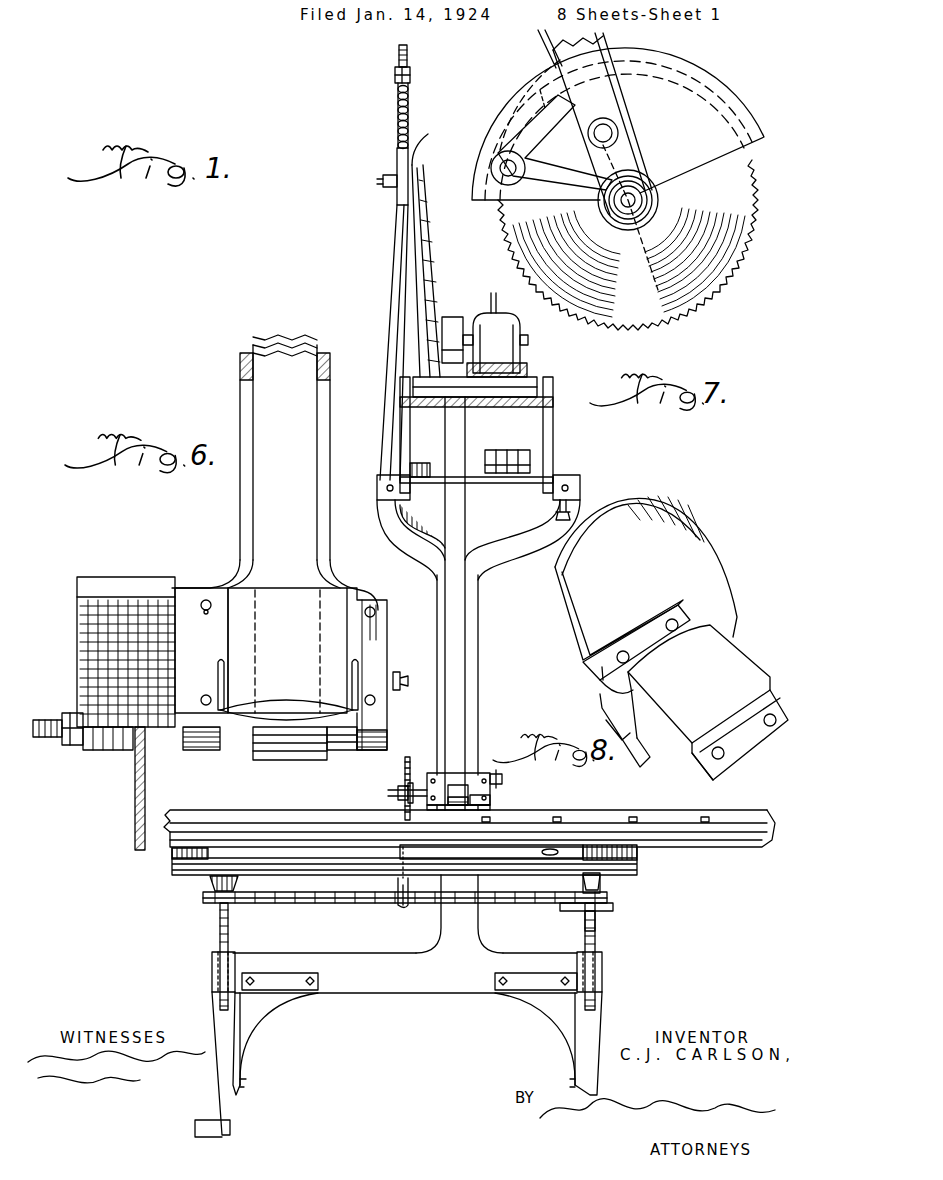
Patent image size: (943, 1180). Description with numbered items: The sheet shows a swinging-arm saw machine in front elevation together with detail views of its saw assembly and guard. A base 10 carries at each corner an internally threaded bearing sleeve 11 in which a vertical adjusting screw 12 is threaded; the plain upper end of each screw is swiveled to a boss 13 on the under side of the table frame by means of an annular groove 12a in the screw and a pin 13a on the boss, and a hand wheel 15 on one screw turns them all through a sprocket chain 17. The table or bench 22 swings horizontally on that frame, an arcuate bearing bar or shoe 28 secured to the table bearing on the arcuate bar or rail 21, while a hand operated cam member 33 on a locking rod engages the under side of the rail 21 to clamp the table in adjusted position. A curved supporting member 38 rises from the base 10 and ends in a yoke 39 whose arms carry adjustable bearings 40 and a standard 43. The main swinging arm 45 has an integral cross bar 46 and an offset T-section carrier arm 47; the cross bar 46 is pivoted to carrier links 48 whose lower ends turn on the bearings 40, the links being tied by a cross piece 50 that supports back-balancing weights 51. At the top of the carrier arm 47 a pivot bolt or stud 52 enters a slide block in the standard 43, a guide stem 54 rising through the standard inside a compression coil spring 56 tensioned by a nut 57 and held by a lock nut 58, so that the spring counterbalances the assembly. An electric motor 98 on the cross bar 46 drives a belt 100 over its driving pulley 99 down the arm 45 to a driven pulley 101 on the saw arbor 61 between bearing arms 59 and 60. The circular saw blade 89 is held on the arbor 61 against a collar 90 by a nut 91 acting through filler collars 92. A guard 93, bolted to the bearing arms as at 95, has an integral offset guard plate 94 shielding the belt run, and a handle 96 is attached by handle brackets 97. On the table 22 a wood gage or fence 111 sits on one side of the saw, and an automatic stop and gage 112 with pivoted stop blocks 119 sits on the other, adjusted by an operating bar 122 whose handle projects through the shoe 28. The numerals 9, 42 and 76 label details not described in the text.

In FIG. 7, the swinging arm 9 is at (596, 118).
In FIG. 1, the base 10 is at (365, 960).
In FIG. 1, the bearing sleeve 11 is at (240, 960).
In FIG. 1, the adjusting screw 12 is at (219, 922).
In FIG. 1, the annular groove 12a is at (560, 903).
In FIG. 1, the boss 13 is at (210, 882).
In FIG. 1, the pin 13a is at (601, 880).
In FIG. 1, the hand wheel 15 is at (614, 906).
In FIG. 1, the sprocket chain 17 is at (305, 903).
In FIG. 1, the arcuate bar or rail 21 is at (640, 870).
In FIG. 1, the table or bench 22 is at (722, 840).
In FIG. 1, the arcuate bearing bar or shoe 28 is at (640, 852).
In FIG. 1, the hand operated cam member 33 is at (403, 906).
In FIG. 1, the curved supporting member 38 is at (480, 697).
In FIG. 1, the yoke 39 is at (487, 535).
In FIG. 1, the bearings 40 is at (380, 478).
In FIG. 1, the clamp screw 42 is at (572, 512).
In FIG. 1, the standard 43 is at (392, 283).
In FIG. 1, the main swinging arm 45 is at (467, 640).
In FIG. 6, the main swinging arm 45 is at (240, 500).
In FIG. 1, the cross bar 46 is at (500, 393).
In FIG. 1, the carrier arm 47 is at (432, 290).
In FIG. 1, the carrier links 48 is at (411, 430).
In FIG. 1, the cross piece 50 is at (425, 468).
In FIG. 1, the weights 51 is at (492, 455).
In FIG. 1, the pivot bolt or stud 52 is at (416, 158).
In FIG. 1, the guide stem 54 is at (409, 50).
In FIG. 1, the compression coil spring 56 is at (409, 110).
In FIG. 1, the nut 57 is at (413, 78).
In FIG. 1, the lock nut 58 is at (394, 74).
In FIG. 1, the bearing arm 59 is at (492, 798).
In FIG. 6, the bearing arm 59 is at (382, 730).
In FIG. 1, the bearing arm 60 is at (430, 773).
In FIG. 6, the bearing arm 60 is at (202, 750).
In FIG. 1, the saw arbor 61 is at (478, 810).
In FIG. 6, the saw arbor 61 is at (343, 741).
In FIG. 7, the saw arbor 61 is at (643, 185).
In FIG. 1, the pin 76 is at (503, 778).
In FIG. 6, the pin 76 is at (405, 675).
In FIG. 7, the pin 76 is at (615, 128).
In FIG. 1, the circular saw blade 89 is at (404, 771).
In FIG. 6, the circular saw blade 89 is at (135, 795).
In FIG. 7, the circular saw blade 89 is at (722, 278).
In FIG. 6, the collar 90 is at (145, 750).
In FIG. 1, the nut 91 is at (388, 792).
In FIG. 6, the nut 91 is at (60, 740).
In FIG. 6, the filler collars 92 is at (78, 748).
In FIG. 6, the guard 93 is at (120, 583).
In FIG. 7, the guard 93 is at (735, 96).
In FIG. 8, the guard 93 is at (700, 550).
In FIG. 6, the offset guard plate 94 is at (287, 650).
In FIG. 8, the offset guard plate 94 is at (738, 665).
In FIG. 6, the bolts 95 is at (206, 612).
In FIG. 6, the handle 96 is at (272, 707).
In FIG. 7, the handle 96 is at (512, 180).
In FIG. 6, the handle brackets 97 is at (358, 670).
In FIG. 7, the handle brackets 97 is at (533, 150).
In FIG. 1, the electric motor 98 is at (522, 353).
In FIG. 1, the driving pulley 99 is at (474, 340).
In FIG. 1, the belt 100 is at (452, 317).
In FIG. 6, the belt 100 is at (285, 447).
In FIG. 1, the driven pulley 101 is at (456, 786).
In FIG. 6, the driven pulley 101 is at (258, 760).
In FIG. 1, the wood gage or fence 111 is at (294, 817).
In FIG. 1, the automatic stop and gage 112 is at (622, 810).
In FIG. 1, the pivoted stop blocks 119 is at (528, 819).
In FIG. 1, the operating bar 122 is at (555, 848).